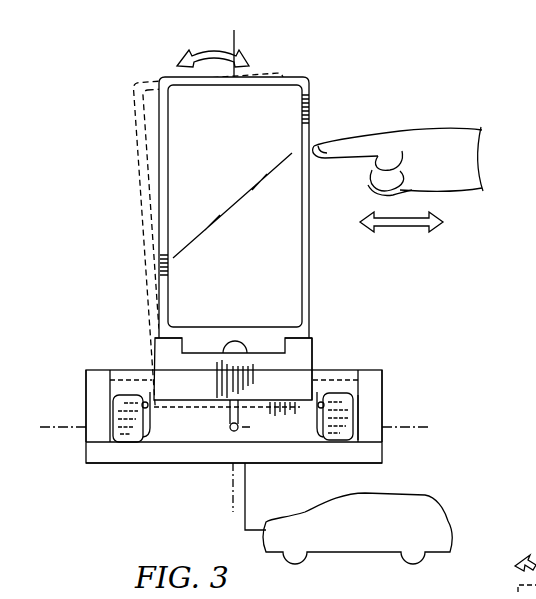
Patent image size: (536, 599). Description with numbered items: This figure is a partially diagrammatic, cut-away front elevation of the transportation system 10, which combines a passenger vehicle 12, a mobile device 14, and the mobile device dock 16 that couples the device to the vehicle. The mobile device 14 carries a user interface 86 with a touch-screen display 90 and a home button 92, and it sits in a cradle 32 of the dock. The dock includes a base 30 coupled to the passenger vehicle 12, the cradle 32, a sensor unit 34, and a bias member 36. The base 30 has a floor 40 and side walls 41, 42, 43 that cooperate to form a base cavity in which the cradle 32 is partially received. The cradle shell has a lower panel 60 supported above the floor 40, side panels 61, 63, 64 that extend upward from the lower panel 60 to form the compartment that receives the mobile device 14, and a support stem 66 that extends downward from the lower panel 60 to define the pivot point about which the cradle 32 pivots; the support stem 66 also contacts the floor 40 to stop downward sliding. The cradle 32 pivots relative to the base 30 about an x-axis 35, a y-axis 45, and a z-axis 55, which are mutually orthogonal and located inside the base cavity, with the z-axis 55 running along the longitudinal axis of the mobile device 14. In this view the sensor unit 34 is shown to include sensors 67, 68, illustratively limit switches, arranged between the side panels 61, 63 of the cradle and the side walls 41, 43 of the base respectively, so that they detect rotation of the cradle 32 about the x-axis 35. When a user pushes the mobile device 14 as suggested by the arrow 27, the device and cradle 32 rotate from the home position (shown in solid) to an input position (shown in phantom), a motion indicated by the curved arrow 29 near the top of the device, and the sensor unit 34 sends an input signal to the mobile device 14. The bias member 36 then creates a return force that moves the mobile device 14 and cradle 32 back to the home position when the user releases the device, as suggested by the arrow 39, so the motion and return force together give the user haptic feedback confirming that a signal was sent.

The transportation system 10 is at (472, 106).
The passenger vehicle 12 is at (364, 493).
The mobile device 14 is at (231, 201).
The mobile device dock 16 is at (385, 362).
The arrow 27 is at (400, 228).
The rotational movement direction arrow 29 is at (218, 49).
The base 30 is at (385, 382).
The cradle 32 is at (316, 340).
The sensor unit 34 is at (360, 420).
The x-axis 35 is at (231, 432).
The bias member 36 is at (330, 378).
The arrow 39 is at (535, 538).
The floor 40 is at (128, 465).
The side wall 41 is at (83, 384).
The side wall 42 is at (96, 417).
The side wall 43 is at (388, 419).
The y-axis 45 is at (73, 427).
The z-axis 55 is at (237, 38).
The lower panel 60 is at (181, 405).
The side panel 61 is at (150, 342).
The side panel 63 is at (316, 352).
The side panel 64 is at (196, 368).
The support stem 66 is at (222, 412).
The sensor 67 is at (130, 437).
The sensor 68 is at (358, 434).
The user interface 86 is at (163, 170).
The touch-screen display 90 is at (182, 130).
The home button 92 is at (232, 343).